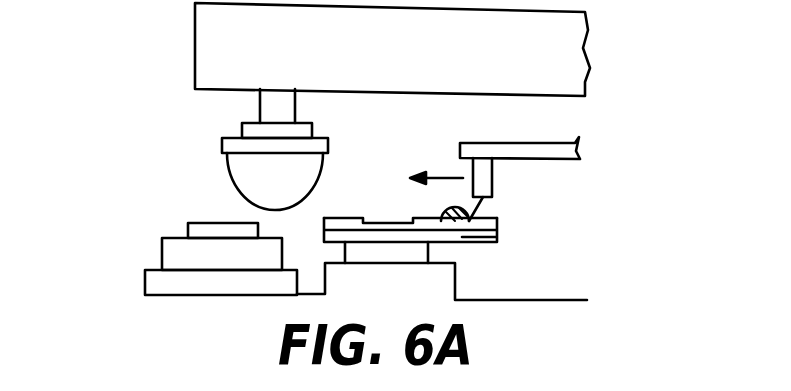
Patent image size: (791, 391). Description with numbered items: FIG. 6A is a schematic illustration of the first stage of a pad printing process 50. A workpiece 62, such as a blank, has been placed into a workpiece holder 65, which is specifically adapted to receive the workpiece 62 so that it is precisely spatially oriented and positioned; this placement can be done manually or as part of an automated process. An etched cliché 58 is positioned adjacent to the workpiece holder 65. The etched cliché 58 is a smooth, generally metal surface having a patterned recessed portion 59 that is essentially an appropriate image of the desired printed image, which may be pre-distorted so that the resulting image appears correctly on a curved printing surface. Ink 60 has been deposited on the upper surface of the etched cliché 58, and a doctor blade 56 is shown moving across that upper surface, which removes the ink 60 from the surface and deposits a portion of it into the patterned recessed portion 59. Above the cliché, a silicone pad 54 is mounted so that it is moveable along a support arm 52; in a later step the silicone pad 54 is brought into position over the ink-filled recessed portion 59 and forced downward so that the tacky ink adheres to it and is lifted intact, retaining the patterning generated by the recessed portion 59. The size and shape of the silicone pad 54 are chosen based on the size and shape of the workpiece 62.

The assembly system 50 is at (609, 178).
The support arm 52 is at (404, 63).
The silicone pad 54 is at (300, 188).
The doctor blade 56 is at (476, 215).
The etched cliché 58 is at (497, 226).
The patterned recessed portion 59 is at (378, 222).
The ink 60 is at (452, 218).
The workpiece 62 is at (207, 232).
The workpiece holder 65 is at (167, 248).